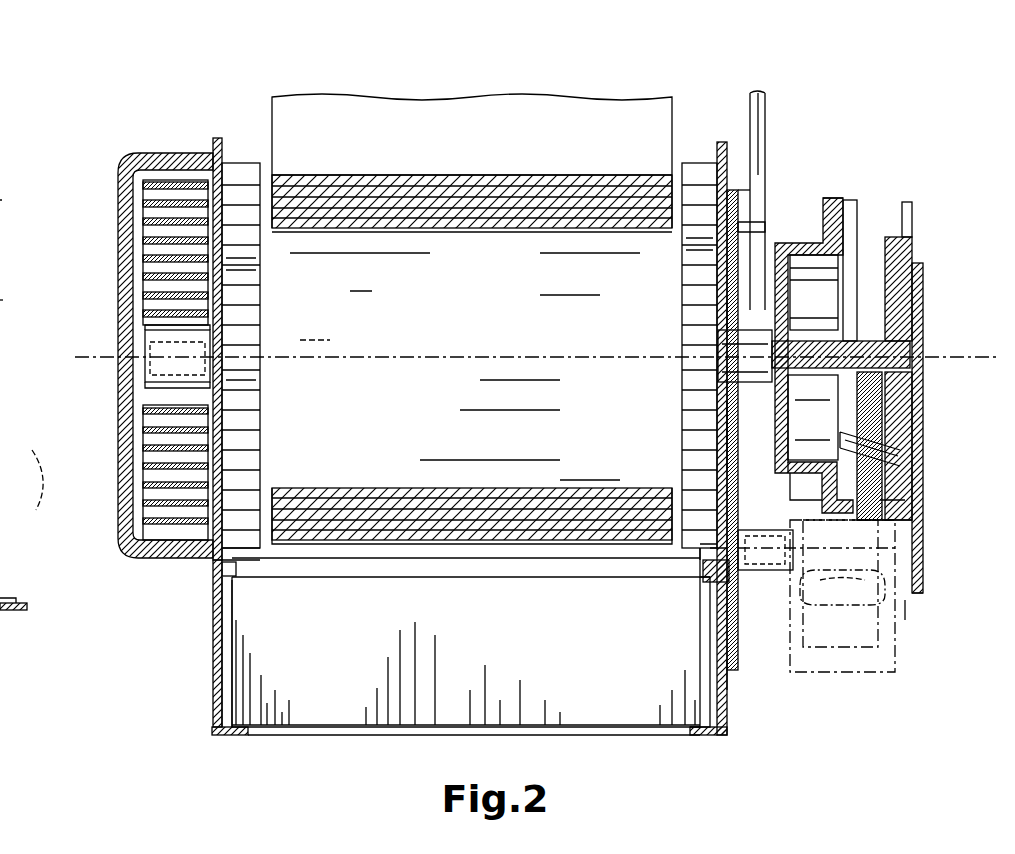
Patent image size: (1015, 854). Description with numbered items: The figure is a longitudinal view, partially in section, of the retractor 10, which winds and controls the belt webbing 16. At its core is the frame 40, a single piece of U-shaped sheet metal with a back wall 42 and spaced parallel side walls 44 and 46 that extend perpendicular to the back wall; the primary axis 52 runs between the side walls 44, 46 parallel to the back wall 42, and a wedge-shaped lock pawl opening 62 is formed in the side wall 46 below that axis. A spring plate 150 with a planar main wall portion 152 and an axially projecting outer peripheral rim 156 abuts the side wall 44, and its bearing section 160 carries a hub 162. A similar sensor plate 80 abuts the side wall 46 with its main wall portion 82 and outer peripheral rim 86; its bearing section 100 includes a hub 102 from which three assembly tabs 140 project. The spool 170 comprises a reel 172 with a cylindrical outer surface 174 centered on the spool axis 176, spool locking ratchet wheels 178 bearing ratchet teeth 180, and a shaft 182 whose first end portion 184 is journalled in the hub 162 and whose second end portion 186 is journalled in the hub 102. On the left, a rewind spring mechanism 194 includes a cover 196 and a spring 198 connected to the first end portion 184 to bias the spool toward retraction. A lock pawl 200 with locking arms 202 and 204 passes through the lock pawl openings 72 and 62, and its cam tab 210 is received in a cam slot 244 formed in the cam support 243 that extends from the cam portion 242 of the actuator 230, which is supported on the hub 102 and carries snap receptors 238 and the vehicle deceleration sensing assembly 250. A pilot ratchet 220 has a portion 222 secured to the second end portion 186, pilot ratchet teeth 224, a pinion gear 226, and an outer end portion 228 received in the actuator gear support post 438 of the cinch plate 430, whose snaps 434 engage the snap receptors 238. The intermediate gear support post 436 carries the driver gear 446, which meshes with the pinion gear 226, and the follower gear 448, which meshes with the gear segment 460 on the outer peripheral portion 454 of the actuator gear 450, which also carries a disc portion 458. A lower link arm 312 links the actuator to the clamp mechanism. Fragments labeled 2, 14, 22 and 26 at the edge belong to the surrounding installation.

The retractor 10 is at (238, 76).
The belt webbing 16 is at (384, 94).
The primary axis 52 is at (358, 349).
The rewind spring mechanism 194 is at (113, 230).
The cover 196 is at (117, 258).
The spring 198 is at (130, 455).
The shaft 182 is at (143, 345).
The first end portion 184 is at (150, 373).
The bearing section 160 is at (226, 402).
The spring plate 150 is at (211, 692).
The spool locking ratchet wheels 178 is at (270, 316).
The ratchet teeth 180 is at (243, 265).
The hub 162 is at (236, 372).
The spool 170 is at (366, 244).
The reel 172 is at (447, 224).
The cylindrical outer surface 174 is at (553, 205).
The spool axis 176 is at (405, 352).
The lock pawl 200 is at (510, 580).
The locking arm 202 is at (262, 569).
The lock pawl opening 72 is at (236, 592).
The frame 40 is at (236, 632).
The side wall 44 is at (238, 656).
The outer peripheral rim 156 is at (236, 737).
The back wall 42 is at (459, 632).
The main wall portion 152 is at (220, 606).
The locking arm 204 is at (700, 576).
The cam tab 210 is at (708, 600).
The lock pawl opening 62 is at (714, 574).
The cam support 243 is at (710, 648).
The side wall 46 is at (700, 712).
The main wall portion 82 is at (729, 690).
The cam portion 242 is at (742, 616).
The sensor plate 80 is at (730, 734).
The outer peripheral rim 86 is at (722, 736).
The cam slot 244 is at (707, 548).
The bearing section 100 is at (716, 431).
The hub 102 is at (720, 329).
The second end portion 186 is at (716, 371).
The outer end portion 228 is at (900, 343).
The assembly tabs 140 is at (765, 298).
The pilot ratchet teeth 224 is at (836, 198).
The pilot ratchet 220 is at (854, 201).
The pinion gear 226 is at (830, 330).
The portion 222 is at (798, 474).
The driver gear 446 is at (838, 383).
The lower link arm 312 is at (744, 196).
The actuator 230 is at (754, 190).
The disc portion 458 is at (909, 205).
The outer peripheral portion 454 is at (896, 246).
The actuator gear 450 is at (922, 290).
The actuator gear support post 438 is at (905, 399).
The follower gear 448 is at (910, 416).
The intermediate gear support post 436 is at (902, 441).
The gear segment 460 is at (906, 492).
The cinch plate 430 is at (926, 598).
The snaps 434 is at (910, 616).
The vehicle deceleration sensing assembly 250 is at (850, 676).
The snap receptors 238 is at (766, 561).
The disk 22 is at (21, 471).
The base 26 is at (0, 553).
The disk stack 14 is at (16, 278).
The disk drive 2 is at (5, 190).